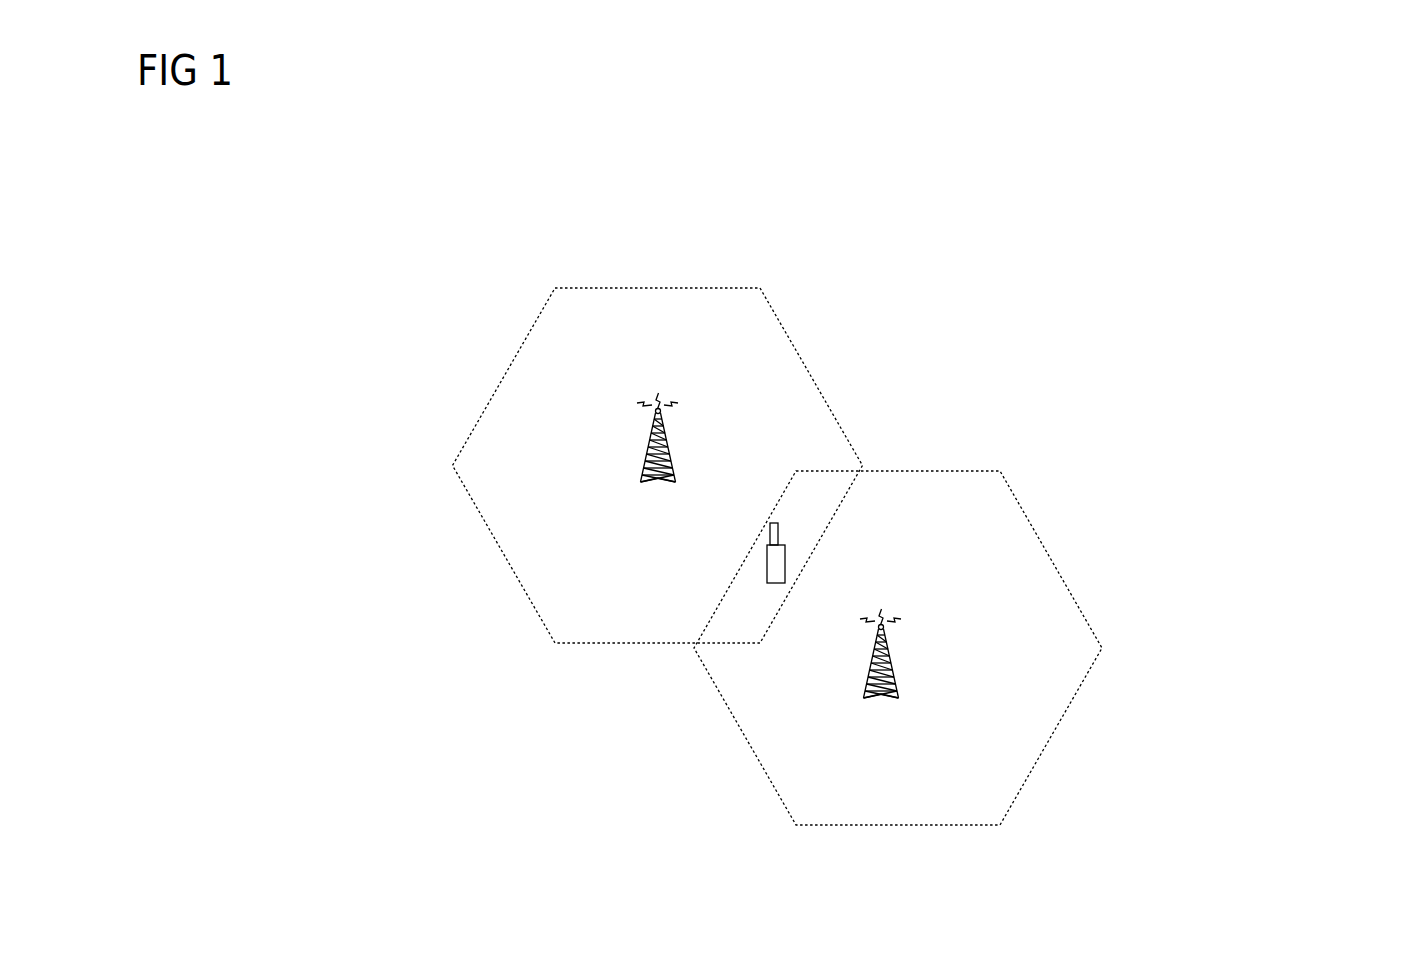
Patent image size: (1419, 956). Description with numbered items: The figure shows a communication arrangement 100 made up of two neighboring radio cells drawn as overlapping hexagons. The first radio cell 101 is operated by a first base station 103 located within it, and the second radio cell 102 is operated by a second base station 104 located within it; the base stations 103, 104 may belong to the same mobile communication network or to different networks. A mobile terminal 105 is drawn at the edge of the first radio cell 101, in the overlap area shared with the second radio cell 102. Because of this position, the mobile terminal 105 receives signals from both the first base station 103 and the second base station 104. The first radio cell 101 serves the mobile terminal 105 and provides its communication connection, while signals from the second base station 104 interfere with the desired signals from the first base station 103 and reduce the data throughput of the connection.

The communication arrangement 100 is at (1313, 142).
The first radio cell 101 is at (781, 329).
The second radio cell 102 is at (987, 471).
The first base station 103 is at (707, 437).
The second base station 104 is at (930, 653).
The mobile terminal 105 is at (785, 552).